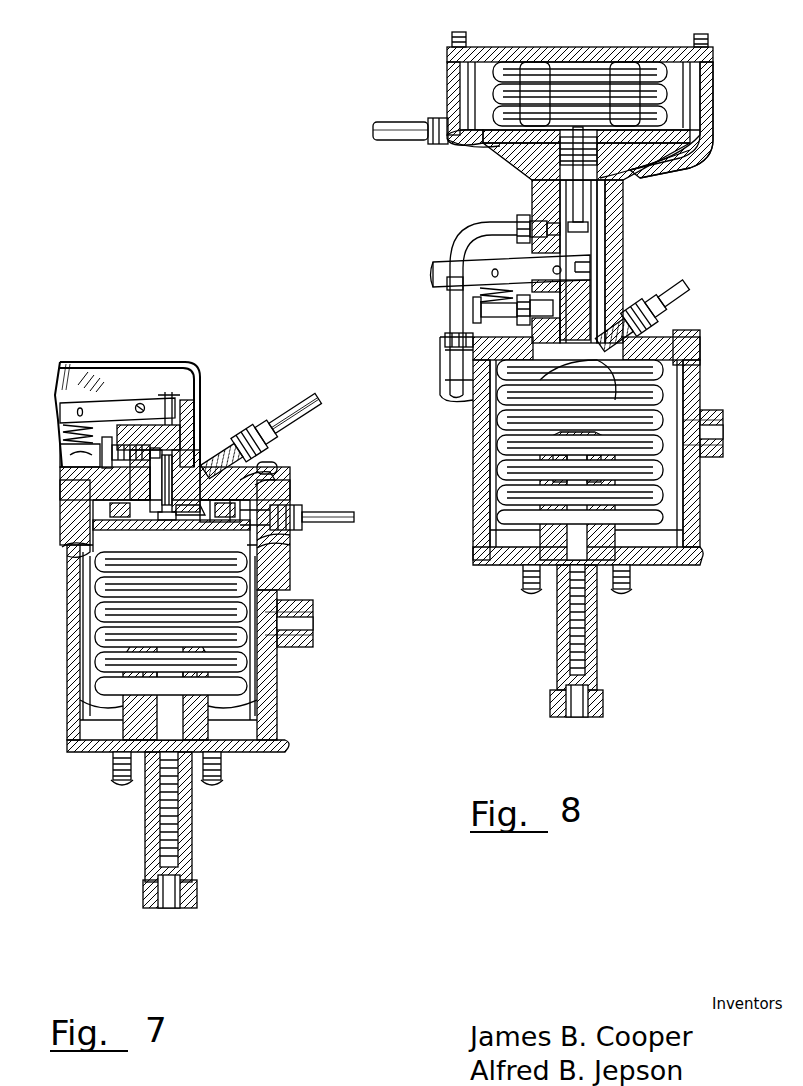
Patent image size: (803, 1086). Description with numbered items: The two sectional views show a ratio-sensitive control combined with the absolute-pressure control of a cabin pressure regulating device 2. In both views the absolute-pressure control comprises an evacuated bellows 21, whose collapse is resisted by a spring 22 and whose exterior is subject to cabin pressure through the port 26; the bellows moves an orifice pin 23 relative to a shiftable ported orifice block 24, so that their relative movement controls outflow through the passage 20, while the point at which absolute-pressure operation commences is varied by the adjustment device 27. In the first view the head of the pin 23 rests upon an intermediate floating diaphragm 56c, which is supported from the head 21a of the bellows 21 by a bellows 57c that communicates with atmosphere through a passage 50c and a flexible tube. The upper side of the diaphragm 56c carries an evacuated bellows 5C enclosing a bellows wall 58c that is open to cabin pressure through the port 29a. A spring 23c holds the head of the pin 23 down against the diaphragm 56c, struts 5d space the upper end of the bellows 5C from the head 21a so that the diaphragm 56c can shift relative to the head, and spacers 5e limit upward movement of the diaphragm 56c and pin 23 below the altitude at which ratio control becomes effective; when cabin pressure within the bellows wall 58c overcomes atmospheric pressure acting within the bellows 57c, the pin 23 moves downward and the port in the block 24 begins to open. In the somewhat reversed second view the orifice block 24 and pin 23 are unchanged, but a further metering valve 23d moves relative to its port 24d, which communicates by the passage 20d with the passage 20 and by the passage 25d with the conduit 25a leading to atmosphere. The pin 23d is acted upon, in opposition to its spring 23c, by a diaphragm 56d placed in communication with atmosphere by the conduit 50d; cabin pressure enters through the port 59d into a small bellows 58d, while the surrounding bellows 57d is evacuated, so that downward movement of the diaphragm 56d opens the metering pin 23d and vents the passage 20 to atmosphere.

In FIG. 7, the device 2 is at (275, 600).
In FIG. 8, the device 2 is at (668, 548).
In FIG. 7, the evacuated bellows 5C is at (90, 512).
In FIG. 7, the struts 5d is at (92, 536).
In FIG. 7, the spacers 5e is at (72, 483).
In FIG. 7, the passage 20 is at (60, 455).
In FIG. 8, the passage 20 is at (455, 405).
In FIG. 8, the passage 20d is at (452, 246).
In FIG. 7, the evacuated bellows 21 is at (262, 662).
In FIG. 8, the evacuated bellows 21 is at (473, 492).
In FIG. 7, the head 21a is at (70, 549).
In FIG. 7, the spring 22 is at (70, 660).
In FIG. 8, the spring 22 is at (490, 514).
In FIG. 7, the orifice pin 23 is at (175, 492).
In FIG. 8, the orifice pin 23 is at (597, 312).
In FIG. 7, the spring 23c is at (190, 498).
In FIG. 8, the spring 23c is at (690, 152).
In FIG. 8, the metering valve 23d is at (552, 200).
In FIG. 7, the orifice block 24 is at (160, 440).
In FIG. 8, the orifice block 24 is at (600, 280).
In FIG. 8, the port 24d is at (583, 205).
In FIG. 7, the conduit 25a is at (300, 410).
In FIG. 8, the conduit 25a is at (652, 310).
In FIG. 8, the passage 25d is at (615, 240).
In FIG. 7, the port 26 is at (315, 628).
In FIG. 8, the port 26 is at (725, 448).
In FIG. 7, the adjustment device 27 is at (147, 840).
In FIG. 8, the adjustment device 27 is at (557, 646).
In FIG. 7, the port 29a is at (288, 482).
In FIG. 7, the passage 50c is at (354, 518).
In FIG. 8, the conduit 50d is at (375, 142).
In FIG. 7, the floating diaphragm 56c is at (265, 518).
In FIG. 8, the diaphragm 56d is at (515, 125).
In FIG. 7, the bellows 57c is at (285, 545).
In FIG. 8, the bellows 57d is at (470, 93).
In FIG. 7, the bellows wall 58c is at (270, 468).
In FIG. 8, the small bellows 58d is at (660, 90).
In FIG. 8, the port 59d is at (583, 62).